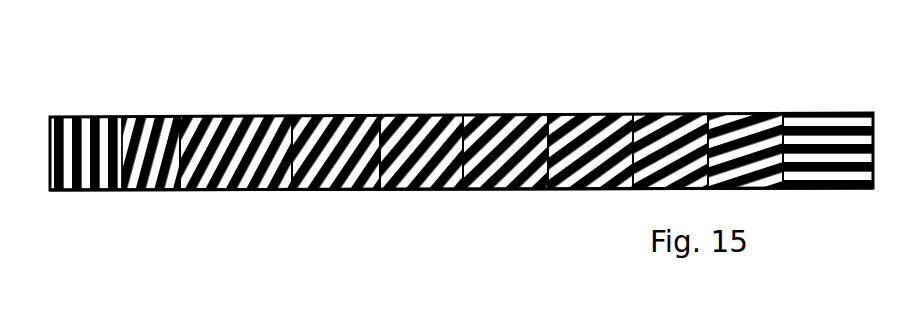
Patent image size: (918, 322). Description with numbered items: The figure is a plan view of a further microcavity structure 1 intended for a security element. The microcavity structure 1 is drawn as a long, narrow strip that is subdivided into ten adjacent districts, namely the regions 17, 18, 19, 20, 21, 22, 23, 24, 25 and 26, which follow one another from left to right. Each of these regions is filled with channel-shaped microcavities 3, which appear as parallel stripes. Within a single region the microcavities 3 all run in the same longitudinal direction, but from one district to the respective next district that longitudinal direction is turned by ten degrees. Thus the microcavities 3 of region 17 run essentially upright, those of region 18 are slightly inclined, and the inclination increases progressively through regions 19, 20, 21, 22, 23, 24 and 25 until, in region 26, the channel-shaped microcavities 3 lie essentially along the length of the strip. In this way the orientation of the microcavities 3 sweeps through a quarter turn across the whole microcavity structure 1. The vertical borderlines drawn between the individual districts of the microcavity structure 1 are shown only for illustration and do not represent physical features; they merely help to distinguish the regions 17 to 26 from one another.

The microcavity structure 1 is at (324, 204).
The channel-shaped microcavities 3 is at (80, 191).
The region 17 is at (80, 116).
The region 18 is at (170, 116).
The region 19 is at (265, 116).
The region 20 is at (340, 115).
The region 21 is at (425, 115).
The region 22 is at (508, 115).
The region 23 is at (587, 114).
The region 24 is at (677, 114).
The region 25 is at (746, 114).
The region 26 is at (832, 114).